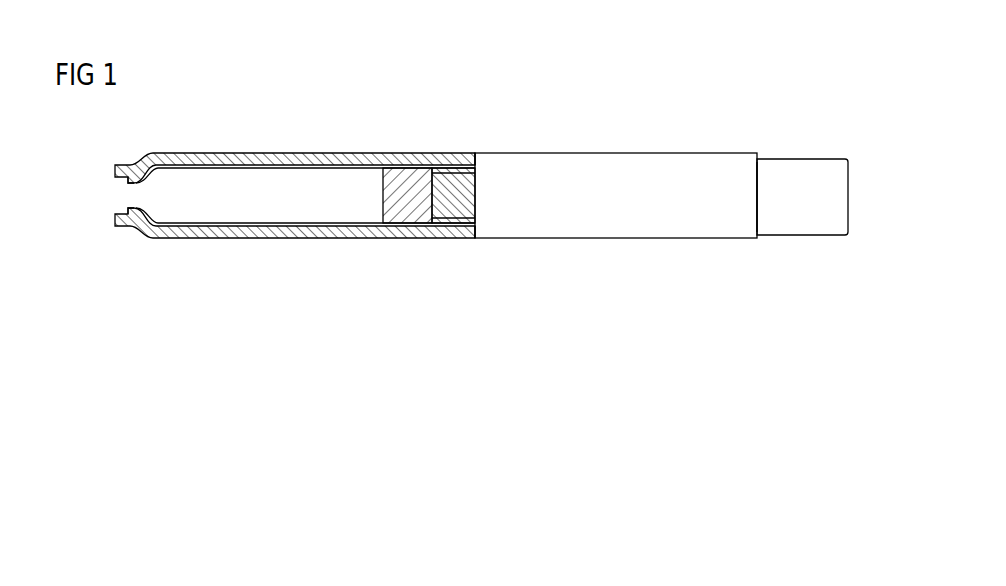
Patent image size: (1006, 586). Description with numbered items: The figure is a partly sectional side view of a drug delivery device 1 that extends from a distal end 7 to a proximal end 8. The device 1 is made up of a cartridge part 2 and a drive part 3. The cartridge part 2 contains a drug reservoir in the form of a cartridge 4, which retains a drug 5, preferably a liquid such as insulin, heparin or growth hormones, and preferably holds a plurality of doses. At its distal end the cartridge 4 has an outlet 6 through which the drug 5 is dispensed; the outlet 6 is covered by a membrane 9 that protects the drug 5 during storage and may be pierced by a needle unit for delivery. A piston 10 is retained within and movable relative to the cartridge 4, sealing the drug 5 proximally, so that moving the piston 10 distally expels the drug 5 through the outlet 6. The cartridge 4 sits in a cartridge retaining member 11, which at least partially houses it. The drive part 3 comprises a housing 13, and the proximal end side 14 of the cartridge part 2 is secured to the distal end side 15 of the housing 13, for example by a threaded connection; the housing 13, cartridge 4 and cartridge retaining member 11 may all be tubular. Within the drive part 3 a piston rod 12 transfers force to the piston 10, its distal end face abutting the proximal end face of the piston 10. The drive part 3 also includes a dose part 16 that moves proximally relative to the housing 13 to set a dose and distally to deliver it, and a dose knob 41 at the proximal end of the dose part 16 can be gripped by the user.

The drug delivery device 1 is at (683, 103).
The cartridge part 2 is at (312, 262).
The drive part 3 is at (622, 262).
The cartridge 4 is at (338, 164).
The drug 5 is at (298, 175).
The outlet 6 is at (137, 195).
The distal end 7 is at (105, 196).
The proximal end 8 is at (860, 193).
The membrane 9 is at (130, 204).
The piston 10 is at (413, 178).
The cartridge retaining member 11 is at (383, 154).
The piston rod 12 is at (458, 180).
The housing 13 is at (597, 162).
The proximal end side 14 is at (470, 238).
The distal end side 15 is at (478, 162).
The dose part 16 is at (808, 168).
The dose knob 41 is at (782, 213).